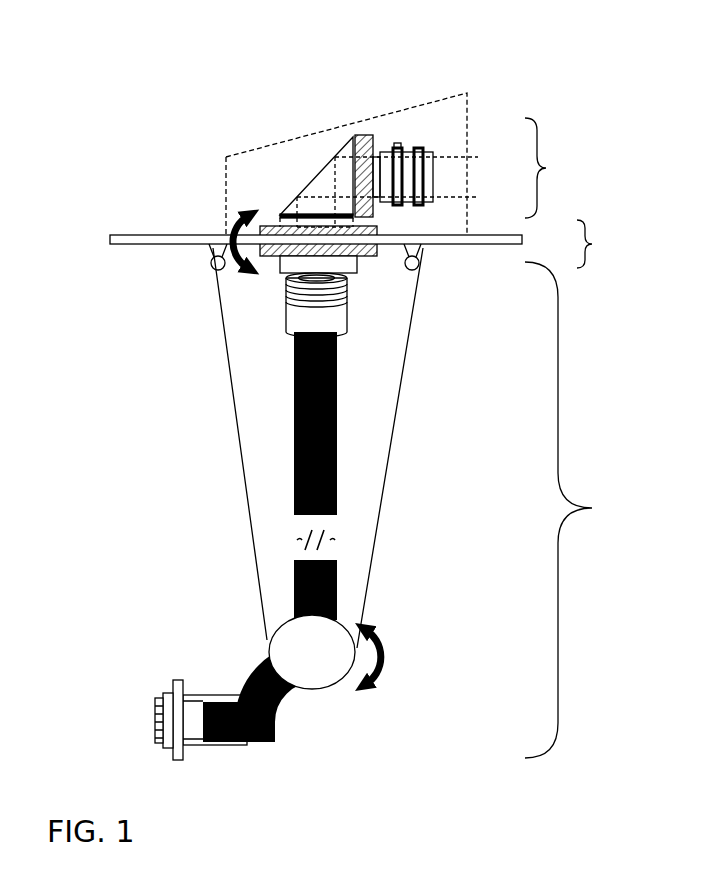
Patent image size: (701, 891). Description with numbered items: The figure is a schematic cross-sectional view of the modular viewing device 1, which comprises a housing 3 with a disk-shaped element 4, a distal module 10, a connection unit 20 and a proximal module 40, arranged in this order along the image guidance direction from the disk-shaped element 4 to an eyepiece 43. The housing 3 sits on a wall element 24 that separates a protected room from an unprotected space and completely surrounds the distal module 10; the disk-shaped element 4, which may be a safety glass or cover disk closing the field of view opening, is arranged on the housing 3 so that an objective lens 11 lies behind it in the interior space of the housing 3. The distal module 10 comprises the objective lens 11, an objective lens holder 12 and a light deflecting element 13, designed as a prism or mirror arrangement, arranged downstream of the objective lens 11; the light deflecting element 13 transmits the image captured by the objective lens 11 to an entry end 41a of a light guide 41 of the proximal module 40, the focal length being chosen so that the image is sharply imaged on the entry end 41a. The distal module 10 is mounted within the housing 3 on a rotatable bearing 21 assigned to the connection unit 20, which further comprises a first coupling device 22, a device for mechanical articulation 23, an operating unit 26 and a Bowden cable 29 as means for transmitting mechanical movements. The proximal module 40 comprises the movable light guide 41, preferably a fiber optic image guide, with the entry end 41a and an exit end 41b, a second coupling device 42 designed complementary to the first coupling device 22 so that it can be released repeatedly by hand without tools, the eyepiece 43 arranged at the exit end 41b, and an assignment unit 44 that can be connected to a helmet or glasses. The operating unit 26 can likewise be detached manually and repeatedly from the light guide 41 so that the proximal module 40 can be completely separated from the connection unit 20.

The modular viewing device 1 is at (126, 150).
The housing 3 is at (340, 126).
The disk-shaped element 4 is at (473, 180).
The distal module 10 is at (551, 168).
The objective lens 11 is at (433, 152).
The objective lens holder 12 is at (363, 135).
The light deflecting element 13 is at (327, 187).
The connection unit 20 is at (600, 244).
The rotatable bearing 21 is at (278, 226).
The first coupling device 22 is at (352, 268).
The device for mechanical articulation 23 is at (212, 266).
The wall element 24 is at (130, 235).
The operating unit 26 is at (300, 665).
The Bowden cable 29 is at (222, 330).
The proximal module 40 is at (574, 510).
The light guide 41 is at (340, 479).
The entry end 41a is at (287, 290).
The exit end 41b is at (202, 716).
The second coupling device 42 is at (348, 315).
The eyepiece 43 is at (158, 712).
The assignment unit 44 is at (178, 680).